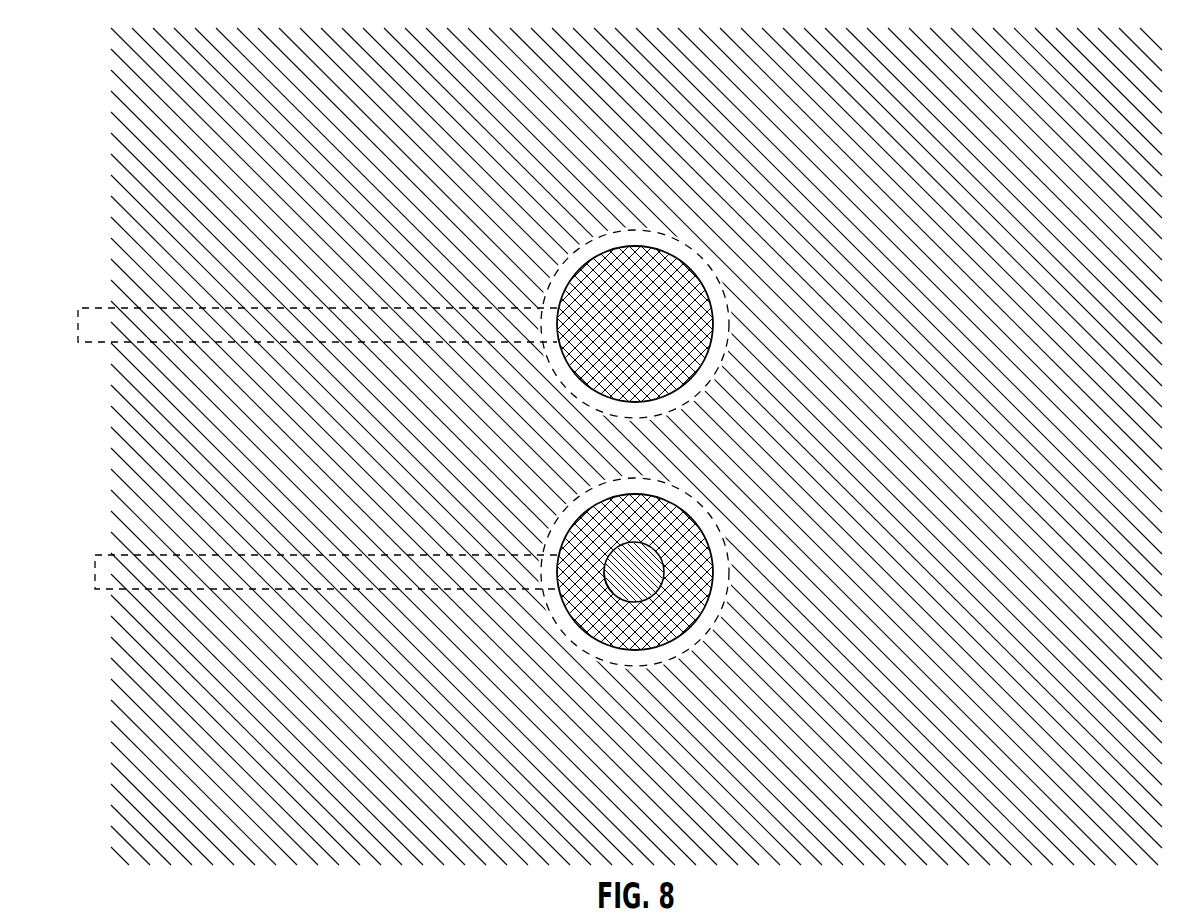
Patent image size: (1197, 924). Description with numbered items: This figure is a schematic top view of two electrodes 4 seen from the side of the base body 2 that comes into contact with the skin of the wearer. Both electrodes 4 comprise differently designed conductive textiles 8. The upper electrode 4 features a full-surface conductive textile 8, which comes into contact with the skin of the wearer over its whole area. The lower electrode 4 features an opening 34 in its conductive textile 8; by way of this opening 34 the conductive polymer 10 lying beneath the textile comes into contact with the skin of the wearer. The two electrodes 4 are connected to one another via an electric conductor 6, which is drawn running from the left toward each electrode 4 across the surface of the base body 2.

The base body 2 is at (937, 426).
The electrode 4 is at (727, 225).
The electric conductor 6 is at (283, 328).
The conductive textile 8 is at (693, 322).
The conductive polymer 10 is at (638, 542).
The opening 34 is at (616, 591).